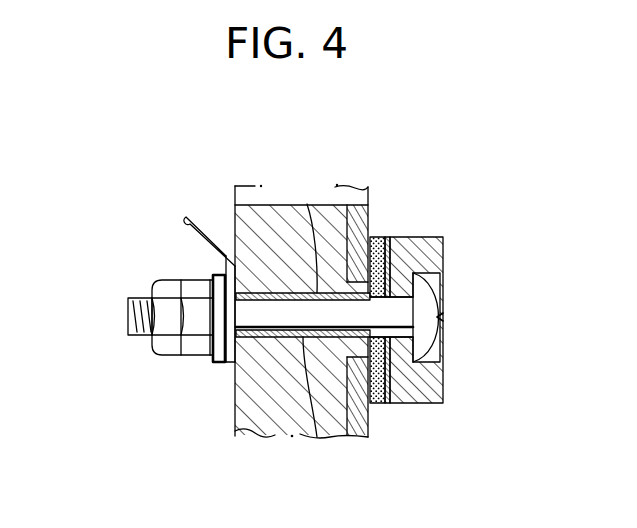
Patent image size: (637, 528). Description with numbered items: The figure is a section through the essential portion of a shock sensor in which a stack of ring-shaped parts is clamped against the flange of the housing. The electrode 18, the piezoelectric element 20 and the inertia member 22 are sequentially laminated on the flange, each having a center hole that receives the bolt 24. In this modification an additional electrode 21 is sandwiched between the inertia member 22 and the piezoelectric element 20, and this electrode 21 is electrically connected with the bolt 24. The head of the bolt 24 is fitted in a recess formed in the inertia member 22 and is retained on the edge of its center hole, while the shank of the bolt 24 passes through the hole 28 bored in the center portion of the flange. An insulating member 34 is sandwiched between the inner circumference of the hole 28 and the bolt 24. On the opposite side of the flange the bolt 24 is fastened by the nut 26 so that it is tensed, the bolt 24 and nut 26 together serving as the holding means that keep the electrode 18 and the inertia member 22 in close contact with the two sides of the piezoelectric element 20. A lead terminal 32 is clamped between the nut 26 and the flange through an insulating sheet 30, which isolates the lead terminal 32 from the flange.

The electrode 18 is at (449, 253).
The piezoelectric element 20 is at (380, 236).
The electrode 21 is at (390, 236).
The inertia member 22 is at (438, 236).
The bolt 24 is at (127, 302).
The nut 26 is at (165, 357).
The hole 28 is at (318, 437).
The insulating sheet 30 is at (232, 254).
The lead terminal 32 is at (185, 229).
The insulating member 34 is at (307, 204).